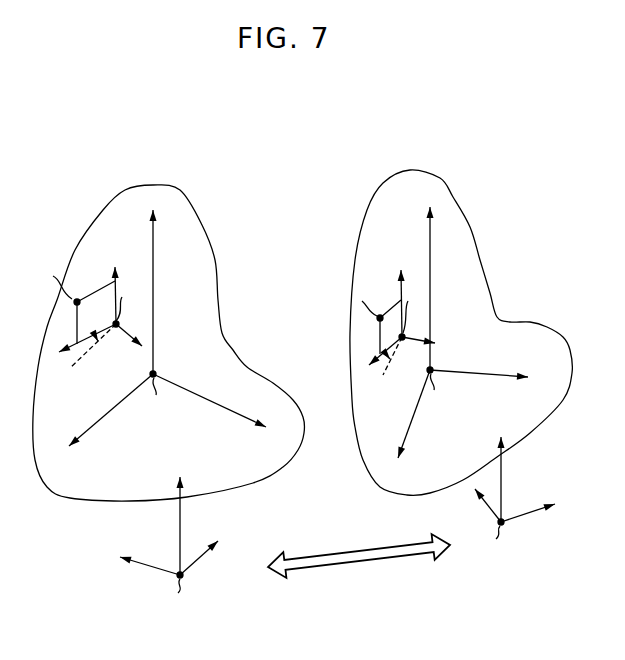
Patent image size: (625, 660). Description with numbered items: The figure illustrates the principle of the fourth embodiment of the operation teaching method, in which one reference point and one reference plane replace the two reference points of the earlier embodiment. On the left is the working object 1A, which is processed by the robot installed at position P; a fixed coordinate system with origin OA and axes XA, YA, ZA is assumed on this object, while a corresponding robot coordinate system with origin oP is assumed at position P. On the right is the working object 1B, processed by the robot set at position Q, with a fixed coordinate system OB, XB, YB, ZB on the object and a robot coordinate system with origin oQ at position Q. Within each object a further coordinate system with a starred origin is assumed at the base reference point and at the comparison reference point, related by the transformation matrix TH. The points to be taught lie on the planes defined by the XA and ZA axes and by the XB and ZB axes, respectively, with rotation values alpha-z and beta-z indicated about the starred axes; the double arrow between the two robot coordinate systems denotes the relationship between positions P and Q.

The working object 1A is at (202, 227).
The working object 1B is at (453, 204).
The robot position P is at (191, 578).
The robot position Q is at (514, 528).